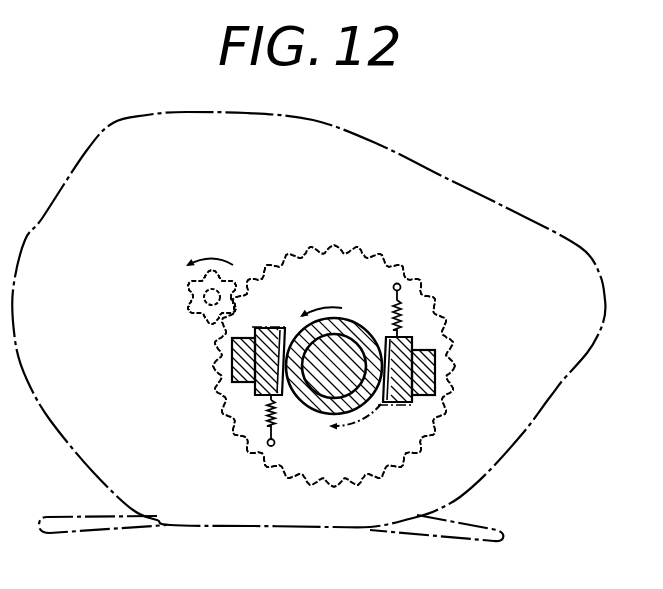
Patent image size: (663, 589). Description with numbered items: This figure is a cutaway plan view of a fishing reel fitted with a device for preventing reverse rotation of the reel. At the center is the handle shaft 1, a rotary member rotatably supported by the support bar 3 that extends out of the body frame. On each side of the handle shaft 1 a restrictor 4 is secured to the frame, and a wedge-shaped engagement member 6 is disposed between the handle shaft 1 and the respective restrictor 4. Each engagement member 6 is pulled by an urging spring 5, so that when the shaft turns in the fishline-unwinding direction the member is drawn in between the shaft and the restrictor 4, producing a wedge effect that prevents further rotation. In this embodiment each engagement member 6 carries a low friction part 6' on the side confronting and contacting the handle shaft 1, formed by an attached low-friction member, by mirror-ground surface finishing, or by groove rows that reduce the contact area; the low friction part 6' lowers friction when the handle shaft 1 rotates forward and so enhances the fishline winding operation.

The handle shaft 1 is at (341, 325).
The support bar 3 is at (355, 333).
The restrictor 4 is at (232, 375).
The urging spring 5 is at (267, 421).
The wedge-shaped engagement member 6 is at (325, 366).
The low friction part 6' is at (383, 296).